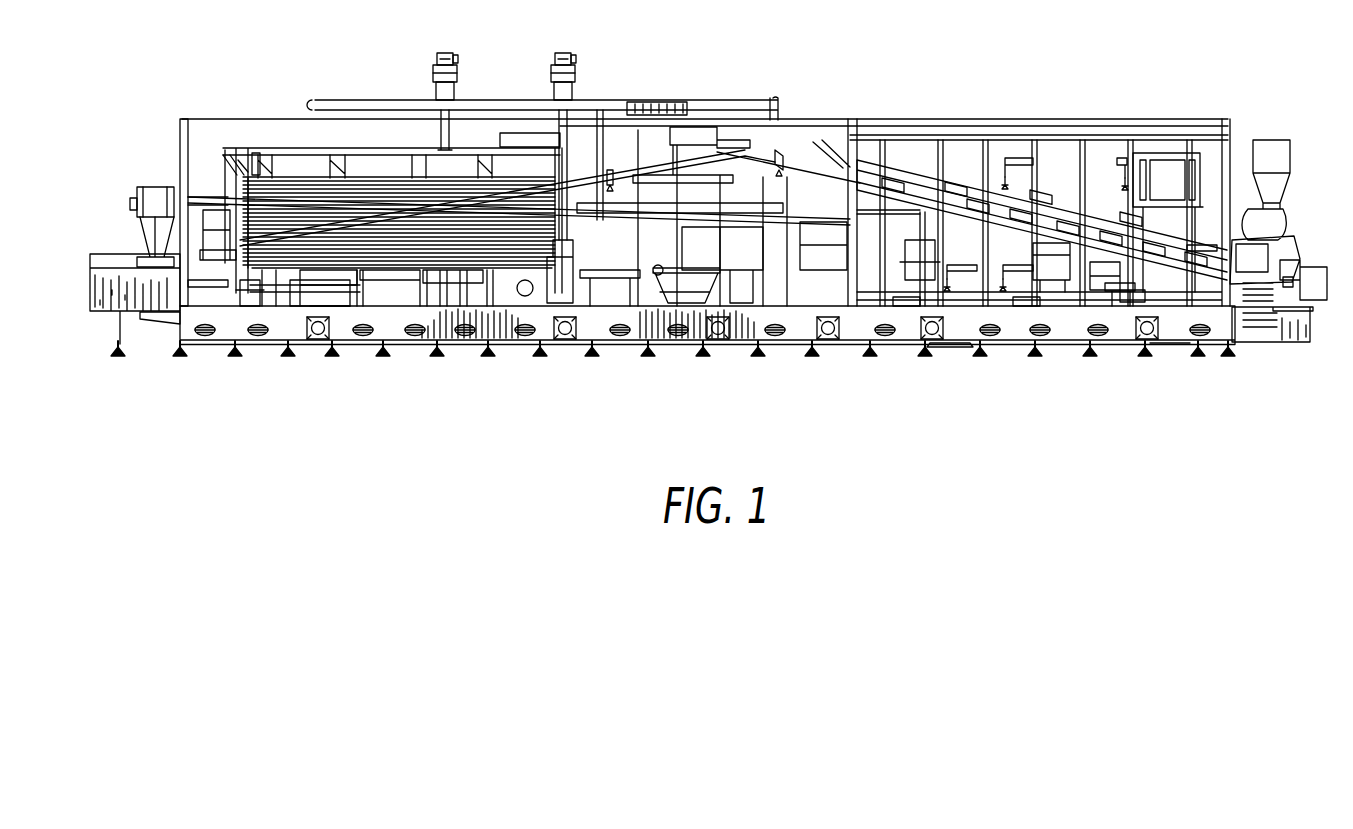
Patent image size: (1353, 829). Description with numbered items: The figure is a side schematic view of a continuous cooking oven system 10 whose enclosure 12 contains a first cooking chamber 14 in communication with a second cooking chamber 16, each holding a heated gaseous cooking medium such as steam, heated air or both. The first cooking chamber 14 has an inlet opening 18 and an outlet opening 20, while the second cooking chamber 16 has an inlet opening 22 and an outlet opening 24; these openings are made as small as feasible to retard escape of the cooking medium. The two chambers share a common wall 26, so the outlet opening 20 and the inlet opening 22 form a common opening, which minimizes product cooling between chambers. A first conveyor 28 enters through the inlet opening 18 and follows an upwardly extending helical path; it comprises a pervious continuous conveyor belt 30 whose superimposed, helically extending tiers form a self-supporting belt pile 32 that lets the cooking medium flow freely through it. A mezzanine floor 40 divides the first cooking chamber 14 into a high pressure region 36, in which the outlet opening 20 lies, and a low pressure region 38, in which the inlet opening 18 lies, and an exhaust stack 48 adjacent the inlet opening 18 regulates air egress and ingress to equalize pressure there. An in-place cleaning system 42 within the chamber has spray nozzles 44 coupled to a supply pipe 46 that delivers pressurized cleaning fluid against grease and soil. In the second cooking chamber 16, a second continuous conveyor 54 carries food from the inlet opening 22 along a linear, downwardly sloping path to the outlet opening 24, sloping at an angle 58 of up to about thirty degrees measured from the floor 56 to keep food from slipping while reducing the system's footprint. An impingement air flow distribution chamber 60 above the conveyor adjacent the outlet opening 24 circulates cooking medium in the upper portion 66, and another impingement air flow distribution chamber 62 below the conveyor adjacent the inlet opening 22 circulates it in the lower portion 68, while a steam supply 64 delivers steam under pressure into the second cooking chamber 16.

The continuous cooking oven system 10 is at (410, 84).
The enclosure 12 is at (983, 104).
The first cooking chamber 14 is at (790, 87).
The second cooking chamber 16 is at (1092, 96).
The inlet opening 18 is at (185, 343).
The outlet opening 20 is at (827, 173).
The inlet opening 22 is at (860, 170).
The outlet opening 24 is at (1227, 275).
The common wall 26 is at (860, 270).
The first conveyor 28 is at (245, 305).
The continuous conveyor belt 30 is at (600, 134).
The belt pile 32 is at (377, 250).
The high pressure region 36 is at (200, 168).
The low pressure region 38 is at (370, 301).
The mezzanine floor 40 is at (338, 155).
The in-place cleaning system 42 is at (278, 157).
The spray nozzles 44 is at (245, 160).
The supply pipe 46 is at (268, 157).
The exhaust stack 48 is at (138, 190).
The second continuous conveyor 54 is at (943, 199).
The floor 56 is at (1109, 285).
The angle 58 is at (1101, 274).
The impingement air flow distribution chamber 60 is at (1170, 147).
The impingement air flow distribution chamber 62 is at (913, 280).
The steam supply 64 is at (1058, 281).
The upper portion 66 is at (1067, 173).
The lower portion 68 is at (1012, 283).